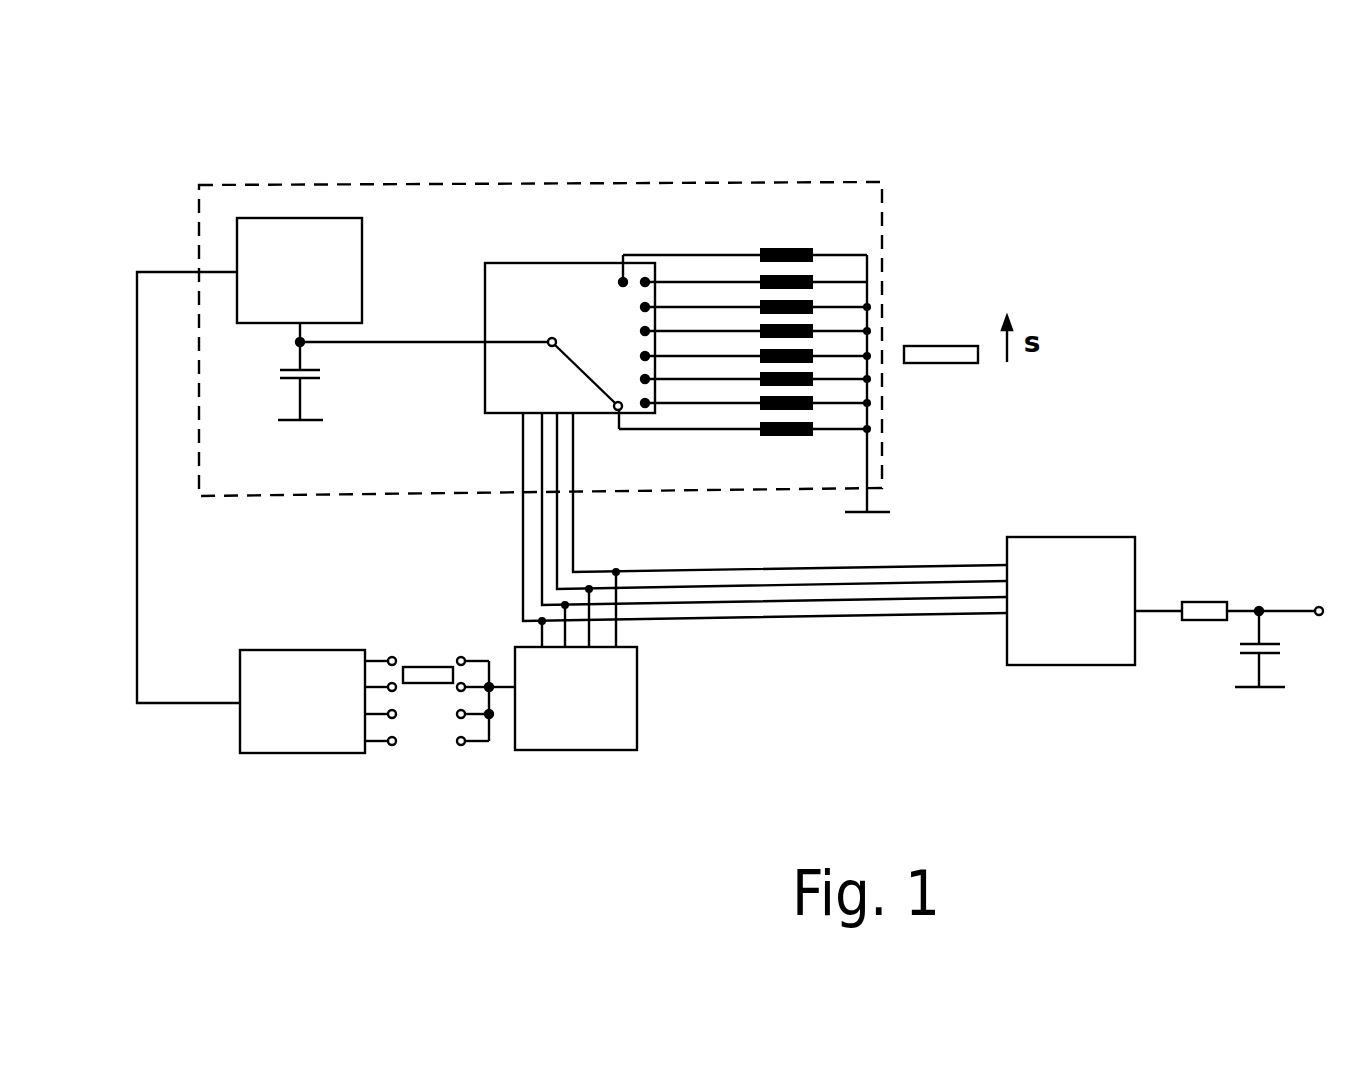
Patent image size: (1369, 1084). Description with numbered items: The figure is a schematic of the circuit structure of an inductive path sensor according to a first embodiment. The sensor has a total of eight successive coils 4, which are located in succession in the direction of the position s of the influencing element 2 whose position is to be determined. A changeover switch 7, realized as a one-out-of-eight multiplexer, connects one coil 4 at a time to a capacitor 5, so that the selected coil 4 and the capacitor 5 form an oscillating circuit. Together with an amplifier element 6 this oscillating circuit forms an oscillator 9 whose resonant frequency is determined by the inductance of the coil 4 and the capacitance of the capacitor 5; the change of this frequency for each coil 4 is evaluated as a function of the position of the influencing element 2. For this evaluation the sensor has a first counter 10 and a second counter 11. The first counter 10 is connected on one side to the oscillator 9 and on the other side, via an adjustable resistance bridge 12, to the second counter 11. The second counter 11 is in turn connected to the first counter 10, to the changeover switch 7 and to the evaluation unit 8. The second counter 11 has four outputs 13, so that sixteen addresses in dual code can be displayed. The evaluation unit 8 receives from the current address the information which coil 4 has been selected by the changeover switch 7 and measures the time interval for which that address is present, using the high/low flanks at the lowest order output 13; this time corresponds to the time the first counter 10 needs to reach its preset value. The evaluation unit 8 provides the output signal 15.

The influencing element 2 is at (937, 352).
The coils 4 is at (803, 303).
The capacitor 5 is at (287, 370).
The amplifier element 6 is at (299, 270).
The changeover switch 7 is at (553, 287).
The evaluation unit 8 is at (1071, 601).
The oscillator 9 is at (199, 230).
The first counter 10 is at (293, 740).
The second counter 11 is at (563, 727).
The adjustable resistance bridge 12 is at (426, 752).
The outputs 13 is at (617, 628).
The output signal 15 is at (1321, 606).